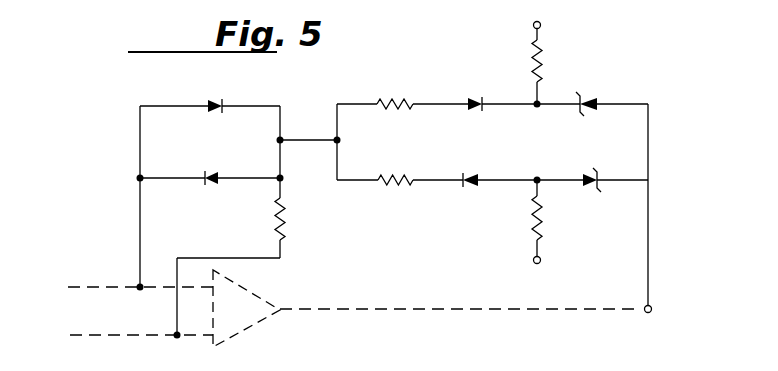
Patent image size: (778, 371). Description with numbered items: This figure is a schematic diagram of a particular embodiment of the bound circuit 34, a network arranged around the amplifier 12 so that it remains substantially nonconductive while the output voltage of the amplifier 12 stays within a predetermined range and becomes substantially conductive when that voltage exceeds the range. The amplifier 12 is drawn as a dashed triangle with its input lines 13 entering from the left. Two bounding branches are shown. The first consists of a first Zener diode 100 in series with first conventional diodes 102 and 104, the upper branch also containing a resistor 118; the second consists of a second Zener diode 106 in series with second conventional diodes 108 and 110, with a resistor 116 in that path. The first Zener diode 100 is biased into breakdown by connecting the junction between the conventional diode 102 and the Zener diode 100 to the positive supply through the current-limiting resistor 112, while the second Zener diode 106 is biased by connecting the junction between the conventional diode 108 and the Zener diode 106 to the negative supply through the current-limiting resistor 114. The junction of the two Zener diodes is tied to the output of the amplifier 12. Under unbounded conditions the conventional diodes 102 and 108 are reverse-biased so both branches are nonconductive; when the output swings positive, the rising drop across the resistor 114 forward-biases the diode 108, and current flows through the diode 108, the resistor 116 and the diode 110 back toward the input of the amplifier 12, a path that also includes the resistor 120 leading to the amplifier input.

The amplifier 12 is at (253, 323).
The input lines 13 is at (75, 303).
The bound circuit 34 is at (380, 239).
The first Zener diode 100 is at (582, 92).
The first conventional diode 102 is at (472, 95).
The first conventional diode 104 is at (216, 97).
The second Zener diode 106 is at (598, 170).
The second conventional diode 108 is at (485, 172).
The second conventional diode 110 is at (213, 172).
The current-limiting resistor 112 is at (548, 58).
The current-limiting resistor 114 is at (532, 218).
The resistor 116 is at (405, 172).
The resistor 118 is at (400, 96).
The resistor 120 is at (289, 222).